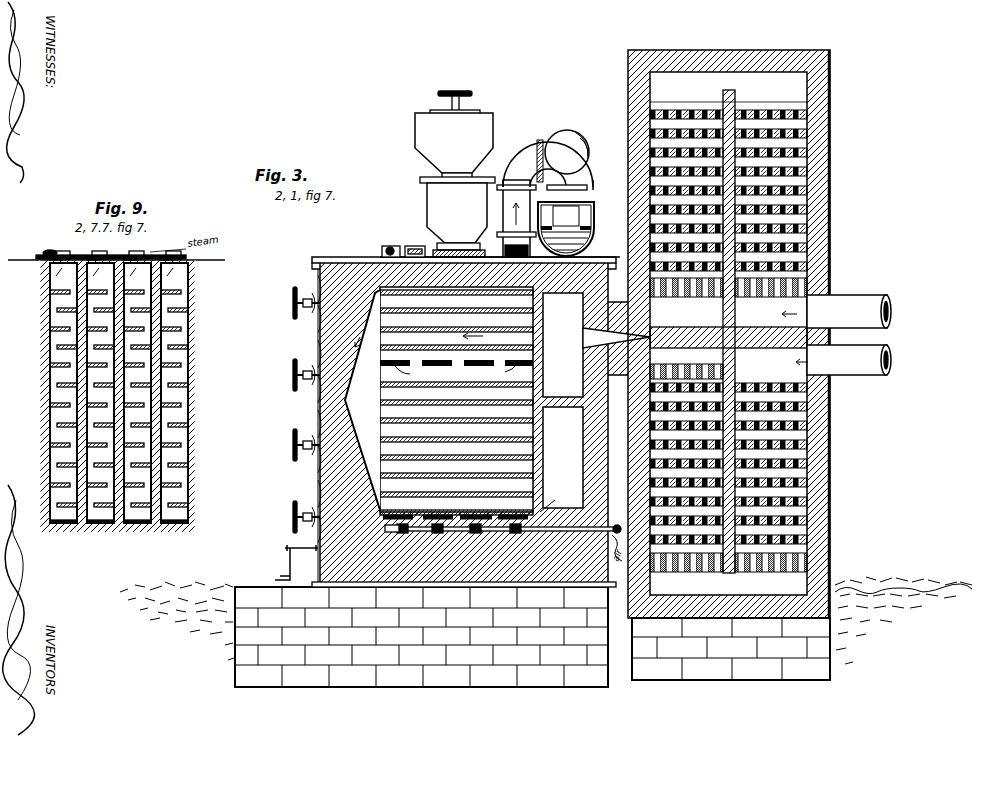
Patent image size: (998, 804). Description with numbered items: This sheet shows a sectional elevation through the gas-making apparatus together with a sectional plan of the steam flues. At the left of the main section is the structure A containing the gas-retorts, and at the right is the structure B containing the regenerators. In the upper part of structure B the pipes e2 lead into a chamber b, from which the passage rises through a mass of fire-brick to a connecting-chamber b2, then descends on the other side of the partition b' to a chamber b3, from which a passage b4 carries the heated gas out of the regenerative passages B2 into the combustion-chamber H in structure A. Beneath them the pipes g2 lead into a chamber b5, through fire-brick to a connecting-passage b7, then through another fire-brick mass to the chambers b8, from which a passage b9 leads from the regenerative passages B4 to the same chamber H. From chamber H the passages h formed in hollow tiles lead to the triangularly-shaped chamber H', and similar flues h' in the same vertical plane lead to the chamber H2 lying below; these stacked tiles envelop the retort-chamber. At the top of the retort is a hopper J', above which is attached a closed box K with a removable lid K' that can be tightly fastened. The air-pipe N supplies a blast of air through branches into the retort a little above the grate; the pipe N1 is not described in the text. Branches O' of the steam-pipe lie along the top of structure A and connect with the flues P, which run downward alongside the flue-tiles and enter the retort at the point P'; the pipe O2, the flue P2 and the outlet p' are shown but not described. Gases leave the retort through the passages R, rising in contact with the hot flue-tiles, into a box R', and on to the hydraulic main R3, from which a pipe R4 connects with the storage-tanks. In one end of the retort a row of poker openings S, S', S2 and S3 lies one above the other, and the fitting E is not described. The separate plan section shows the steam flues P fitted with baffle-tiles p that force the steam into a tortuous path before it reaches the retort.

In FIG. 3, the gas-retort structure A is at (464, 412).
In FIG. 3, the regenerator structure B is at (729, 323).
In FIG. 3, the regenerative passages B2 is at (830, 159).
In FIG. 3, the regenerative passages B4 is at (830, 450).
In FIG. 3, the chamber b is at (771, 312).
In FIG. 3, the partition b' is at (717, 327).
In FIG. 3, the connecting-chamber b2 is at (771, 87).
In FIG. 3, the chamber b3 is at (706, 312).
In FIG. 3, the passage b4 is at (665, 312).
In FIG. 3, the chamber b5 is at (771, 360).
In FIG. 3, the connecting-passage b7 is at (728, 584).
In FIG. 3, the chamber b8 is at (706, 356).
In FIG. 3, the passage b9 is at (665, 356).
In FIG. 3, the pipes e2 is at (836, 311).
In FIG. 3, the pipes g2 is at (843, 360).
In FIG. 3, the outlet bracket E is at (296, 562).
In FIG. 3, the combustion-chamber H is at (563, 345).
In FIG. 3, the triangularly-shaped chamber H' is at (362, 400).
In FIG. 3, the chamber H2 is at (563, 457).
In FIG. 3, the passages h is at (456, 362).
In FIG. 3, the flues h' is at (456, 477).
In FIG. 3, the hopper J' is at (457, 215).
In FIG. 3, the closed box K is at (454, 143).
In FIG. 3, the removable lid K' is at (465, 102).
In FIG. 3, the air-pipe N is at (621, 536).
In FIG. 3, the air distributing pipe N1 is at (507, 537).
In FIG. 3, the branches O' is at (417, 247).
In FIG. 3, the charging pipe O2 is at (386, 248).
In FIG. 9, the entry point P' is at (117, 535).
In FIG. 3, the entry point P' is at (553, 498).
In FIG. 3, the steam pipe branch P2 is at (380, 529).
In FIG. 3, the passages R is at (456, 374).
In FIG. 3, the box R' is at (509, 218).
In FIG. 3, the hydraulic main R3 is at (591, 216).
In FIG. 3, the pipe R4 is at (587, 154).
In FIG. 3, the opening S is at (306, 312).
In FIG. 3, the opening S' is at (306, 383).
In FIG. 3, the opening S2 is at (306, 454).
In FIG. 3, the opening S3 is at (306, 525).
In FIG. 9, the flues P is at (113, 396).
In FIG. 9, the baffle-tiles p is at (112, 386).
In FIG. 9, the passage outlets p' is at (123, 509).